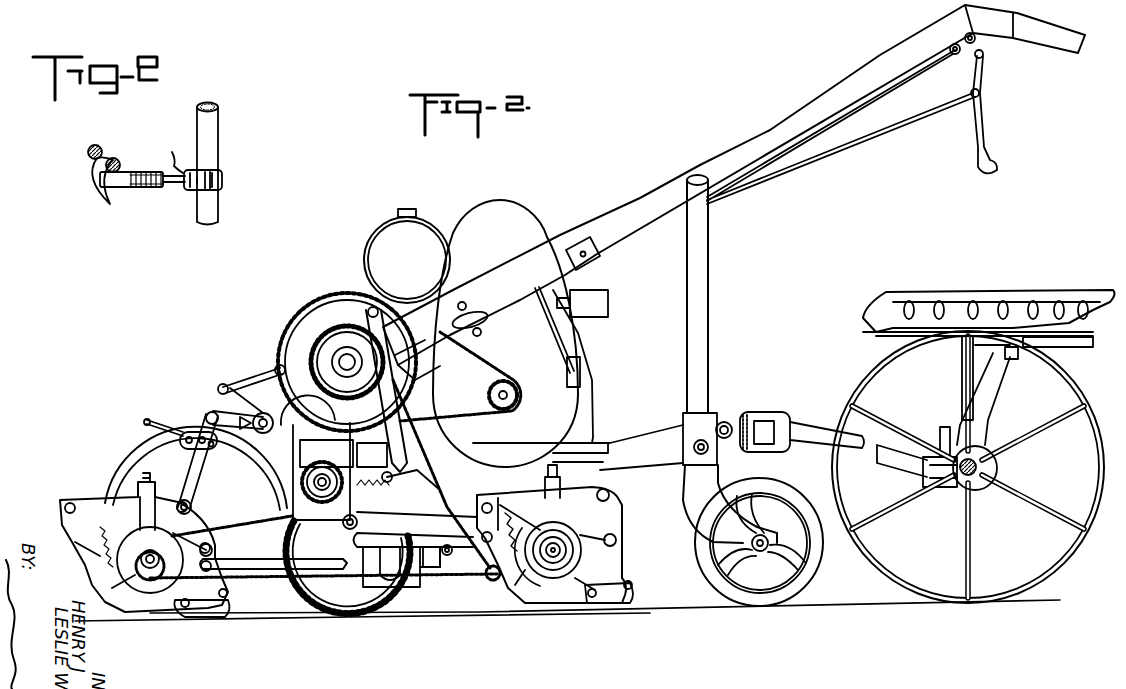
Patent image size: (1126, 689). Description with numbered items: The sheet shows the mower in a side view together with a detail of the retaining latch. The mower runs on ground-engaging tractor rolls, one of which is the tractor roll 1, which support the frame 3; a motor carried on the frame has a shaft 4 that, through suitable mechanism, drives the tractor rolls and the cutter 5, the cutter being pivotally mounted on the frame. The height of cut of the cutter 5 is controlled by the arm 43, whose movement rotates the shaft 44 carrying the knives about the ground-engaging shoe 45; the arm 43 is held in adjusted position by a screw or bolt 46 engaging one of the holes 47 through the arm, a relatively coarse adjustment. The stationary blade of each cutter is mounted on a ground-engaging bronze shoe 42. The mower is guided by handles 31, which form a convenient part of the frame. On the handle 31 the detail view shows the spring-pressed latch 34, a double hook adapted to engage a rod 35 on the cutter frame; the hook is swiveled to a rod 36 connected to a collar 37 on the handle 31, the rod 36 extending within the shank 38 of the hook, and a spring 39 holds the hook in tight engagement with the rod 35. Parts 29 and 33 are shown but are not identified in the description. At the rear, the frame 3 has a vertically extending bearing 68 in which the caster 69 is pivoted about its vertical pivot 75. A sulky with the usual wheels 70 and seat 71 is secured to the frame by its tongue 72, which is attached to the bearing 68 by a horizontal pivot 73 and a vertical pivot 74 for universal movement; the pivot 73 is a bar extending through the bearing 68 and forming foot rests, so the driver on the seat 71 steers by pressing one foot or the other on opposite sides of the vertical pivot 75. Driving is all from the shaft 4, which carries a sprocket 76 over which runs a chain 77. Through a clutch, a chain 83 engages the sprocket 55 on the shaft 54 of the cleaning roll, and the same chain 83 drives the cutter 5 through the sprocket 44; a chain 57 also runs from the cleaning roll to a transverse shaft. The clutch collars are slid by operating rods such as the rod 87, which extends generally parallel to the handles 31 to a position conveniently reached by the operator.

In FIG. 2, the tractor roll 1 is at (360, 617).
In FIG. 2, the frame 3 is at (620, 450).
In FIG. 2, the shaft 4 is at (507, 392).
In FIG. 2, the cutter 5 is at (105, 499).
In FIG. 5, the disc 29 is at (86, 155).
In FIG. 5, the handle 31 is at (213, 139).
In FIG. 2, the handle 31 is at (733, 150).
In FIG. 2, the bracket 33 is at (580, 239).
In FIG. 5, the spring-pressed latch 34 is at (100, 184).
In FIG. 2, the spring-pressed latch 34 is at (483, 306).
In FIG. 5, the rod 35 is at (116, 160).
In FIG. 5, the rod 36 is at (173, 170).
In FIG. 5, the collar 37 is at (192, 191).
In FIG. 5, the shank 38 is at (132, 175).
In FIG. 5, the spring 39 is at (156, 185).
In FIG. 2, the ground-engaging shoe 42 is at (611, 604).
In FIG. 2, the arm 43 is at (137, 452).
In FIG. 2, the shaft 44 is at (147, 568).
In FIG. 2, the ground-engaging shoe 45 is at (205, 618).
In FIG. 2, the screw or bolt 46 is at (198, 412).
In FIG. 2, the holes 47 is at (193, 437).
In FIG. 2, the shaft 54 is at (447, 556).
In FIG. 2, the sprocket 55 is at (438, 567).
In FIG. 2, the chain 57 is at (480, 570).
In FIG. 2, the bearing 68 is at (703, 413).
In FIG. 2, the caster 69 is at (804, 582).
In FIG. 2, the wheels 70 is at (1097, 372).
In FIG. 2, the seat 71 is at (1028, 292).
In FIG. 2, the tongue 72 is at (817, 428).
In FIG. 2, the horizontal pivot 73 is at (728, 422).
In FIG. 2, the vertical pivot 74 is at (775, 410).
In FIG. 2, the vertical pivot 75 is at (687, 386).
In FIG. 2, the sprocket 76 is at (503, 383).
In FIG. 2, the chain 77 is at (472, 427).
In FIG. 2, the chain 83 is at (400, 403).
In FIG. 2, the operating rod 87 is at (505, 272).